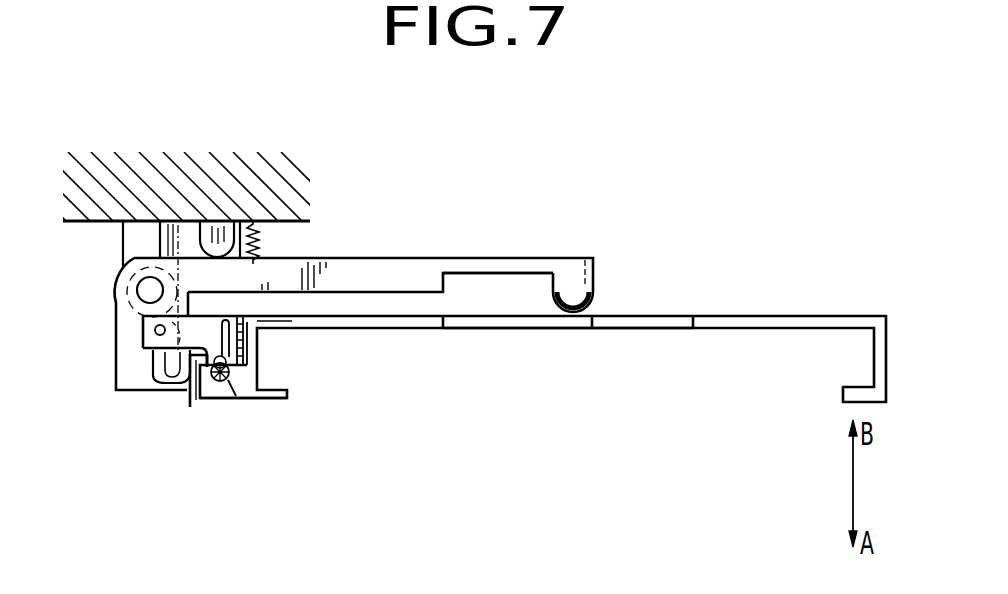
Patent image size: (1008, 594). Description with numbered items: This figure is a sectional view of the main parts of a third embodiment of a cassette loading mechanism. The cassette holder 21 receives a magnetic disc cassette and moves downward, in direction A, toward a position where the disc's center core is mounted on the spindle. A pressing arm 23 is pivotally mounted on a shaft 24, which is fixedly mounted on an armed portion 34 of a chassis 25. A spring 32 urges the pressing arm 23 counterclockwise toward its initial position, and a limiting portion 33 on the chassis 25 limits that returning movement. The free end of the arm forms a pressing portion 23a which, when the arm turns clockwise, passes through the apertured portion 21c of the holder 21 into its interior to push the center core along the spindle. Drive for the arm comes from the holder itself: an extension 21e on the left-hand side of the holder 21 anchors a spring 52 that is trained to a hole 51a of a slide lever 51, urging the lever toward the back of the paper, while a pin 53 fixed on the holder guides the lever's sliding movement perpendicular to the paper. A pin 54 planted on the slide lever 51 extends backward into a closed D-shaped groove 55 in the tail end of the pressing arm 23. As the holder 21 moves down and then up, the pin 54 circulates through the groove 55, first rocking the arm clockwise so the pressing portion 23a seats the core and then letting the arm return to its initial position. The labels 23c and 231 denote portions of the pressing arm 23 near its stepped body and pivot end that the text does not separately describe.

The cassette holder 21 is at (775, 318).
The apertured portion 21c is at (592, 328).
The extension 21e is at (208, 400).
The pressing arm 23 is at (400, 267).
The pressing portion 23a is at (573, 295).
The lever stepped portion 23c is at (505, 267).
The lever end block 231 is at (120, 346).
The shaft 24 is at (150, 282).
The chassis 25 is at (89, 160).
The spring 32 is at (260, 250).
The limiting portion 33 is at (216, 238).
The armed portion 34 is at (127, 252).
The slide lever 51 is at (189, 392).
The hole 51a is at (230, 382).
The spring 52 is at (226, 383).
The pin 53 is at (240, 342).
The pin 54 is at (150, 330).
The groove 55 is at (162, 388).